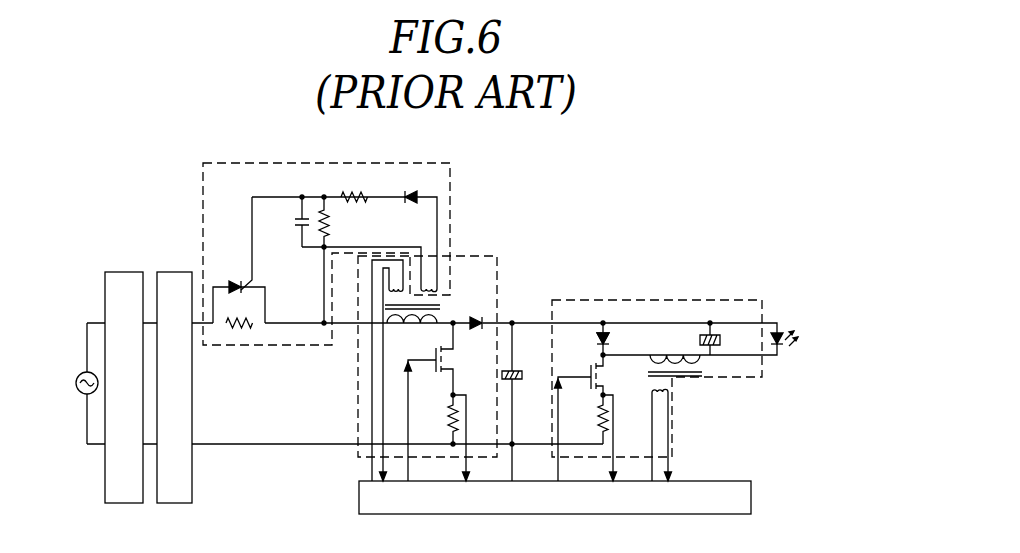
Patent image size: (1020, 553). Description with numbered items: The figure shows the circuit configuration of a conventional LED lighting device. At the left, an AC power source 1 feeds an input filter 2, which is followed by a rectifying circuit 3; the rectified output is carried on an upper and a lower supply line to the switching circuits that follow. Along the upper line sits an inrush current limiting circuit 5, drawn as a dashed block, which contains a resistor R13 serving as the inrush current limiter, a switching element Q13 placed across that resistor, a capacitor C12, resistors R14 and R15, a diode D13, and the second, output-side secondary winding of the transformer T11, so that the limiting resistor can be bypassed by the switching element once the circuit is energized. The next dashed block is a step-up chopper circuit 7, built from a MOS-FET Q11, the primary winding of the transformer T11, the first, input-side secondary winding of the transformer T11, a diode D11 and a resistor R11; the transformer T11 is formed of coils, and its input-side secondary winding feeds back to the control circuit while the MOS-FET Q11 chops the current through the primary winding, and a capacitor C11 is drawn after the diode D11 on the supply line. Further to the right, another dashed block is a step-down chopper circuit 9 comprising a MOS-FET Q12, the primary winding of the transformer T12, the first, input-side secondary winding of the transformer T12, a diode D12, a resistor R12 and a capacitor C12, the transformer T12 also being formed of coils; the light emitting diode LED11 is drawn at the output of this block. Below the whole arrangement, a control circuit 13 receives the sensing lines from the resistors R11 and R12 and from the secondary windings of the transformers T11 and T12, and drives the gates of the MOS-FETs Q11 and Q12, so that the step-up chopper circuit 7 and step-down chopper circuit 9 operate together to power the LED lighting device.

The power source 1 is at (80, 377).
The input filter 2 is at (125, 272).
The rectifying circuit 3 is at (173, 272).
The inrush current limiting circuit 5 is at (203, 188).
The step-up chopper circuit 7 is at (358, 392).
The step-down chopper circuit 9 is at (637, 300).
The control circuit 13 is at (359, 498).
The switching element Q13 is at (236, 260).
The resistor R13 is at (237, 311).
The capacitor C12 is at (507, 276).
The resistor R14 is at (345, 260).
The resistor R15 is at (353, 187).
The diode D13 is at (410, 187).
The transformer T11 is at (409, 370).
The diode D11 is at (475, 314).
The MOS-FET Q11 is at (449, 402).
The resistor R11 is at (439, 438).
The capacitor C11 is at (526, 402).
The diode D12 is at (625, 339).
The MOS-FET Q12 is at (601, 418).
The resistor R12 is at (588, 438).
The transformer T12 is at (693, 409).
The light emitting diode LED11 is at (794, 357).